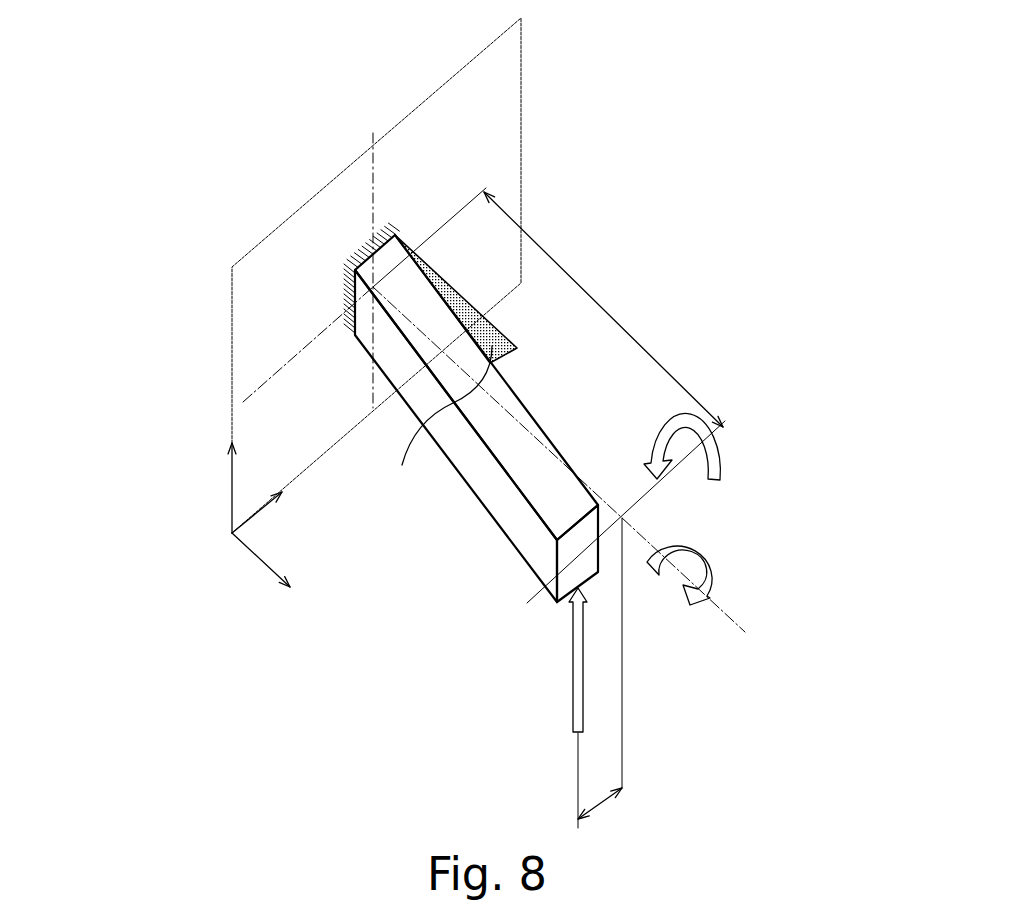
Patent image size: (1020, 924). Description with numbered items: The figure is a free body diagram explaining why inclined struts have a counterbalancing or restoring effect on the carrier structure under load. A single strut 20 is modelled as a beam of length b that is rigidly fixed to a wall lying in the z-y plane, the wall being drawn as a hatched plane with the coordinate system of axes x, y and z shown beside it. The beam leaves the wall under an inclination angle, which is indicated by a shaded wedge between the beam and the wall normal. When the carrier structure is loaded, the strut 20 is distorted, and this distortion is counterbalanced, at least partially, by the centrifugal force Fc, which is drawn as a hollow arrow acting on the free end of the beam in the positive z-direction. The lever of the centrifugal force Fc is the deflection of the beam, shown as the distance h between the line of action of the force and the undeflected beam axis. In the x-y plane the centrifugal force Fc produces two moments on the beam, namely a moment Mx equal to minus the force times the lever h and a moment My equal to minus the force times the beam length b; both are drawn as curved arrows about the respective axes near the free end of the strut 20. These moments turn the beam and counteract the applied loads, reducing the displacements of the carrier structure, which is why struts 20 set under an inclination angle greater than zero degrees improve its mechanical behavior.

The inclined strut 20 is at (528, 446).
The length of the beam b is at (484, 395).
The lever of the centrifugal force h is at (600, 673).
The centrifugal force Fc is at (566, 665).
The moment about the y-axis My is at (709, 446).
The moment about the x-axis Mx is at (710, 573).
The x-axis x is at (268, 569).
The y-axis y is at (264, 512).
The z-axis z is at (222, 485).